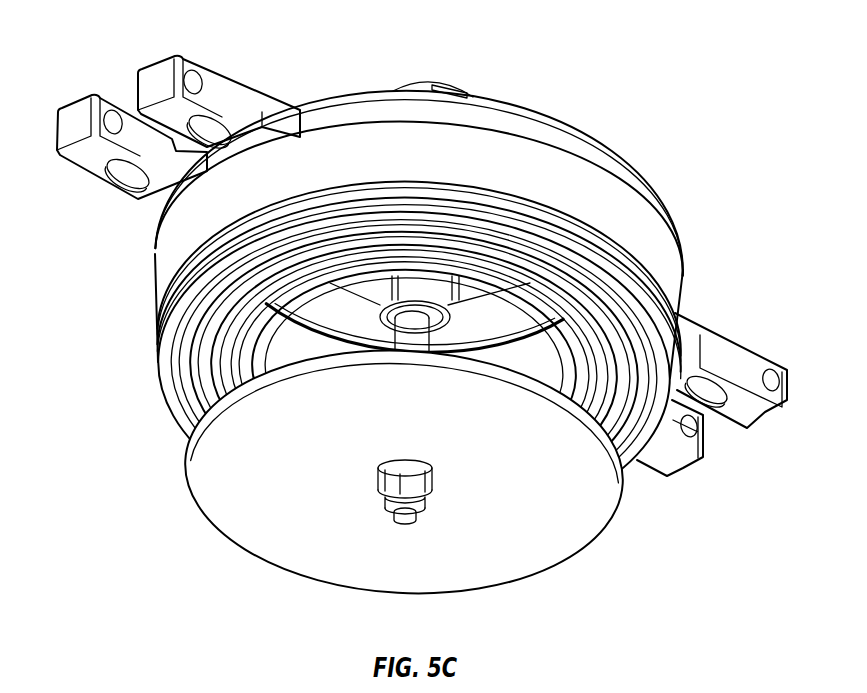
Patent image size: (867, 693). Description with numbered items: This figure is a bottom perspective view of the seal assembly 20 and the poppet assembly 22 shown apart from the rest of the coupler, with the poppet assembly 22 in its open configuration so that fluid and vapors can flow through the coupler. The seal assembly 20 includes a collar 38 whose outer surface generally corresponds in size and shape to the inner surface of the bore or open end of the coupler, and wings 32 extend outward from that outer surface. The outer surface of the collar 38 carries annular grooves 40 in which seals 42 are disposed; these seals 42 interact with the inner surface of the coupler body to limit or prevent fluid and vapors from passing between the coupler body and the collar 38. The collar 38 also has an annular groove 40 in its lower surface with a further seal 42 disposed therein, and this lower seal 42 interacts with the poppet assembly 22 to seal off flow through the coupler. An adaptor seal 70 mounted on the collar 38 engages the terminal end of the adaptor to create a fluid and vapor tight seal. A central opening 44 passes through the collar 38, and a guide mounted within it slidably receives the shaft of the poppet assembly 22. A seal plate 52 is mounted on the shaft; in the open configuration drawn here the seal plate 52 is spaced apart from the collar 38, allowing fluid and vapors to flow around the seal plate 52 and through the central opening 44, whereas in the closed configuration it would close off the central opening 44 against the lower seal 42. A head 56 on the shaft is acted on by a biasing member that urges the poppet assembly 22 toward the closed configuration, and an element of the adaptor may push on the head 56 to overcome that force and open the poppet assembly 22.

The seal assembly 20 is at (700, 118).
The poppet assembly 22 is at (460, 83).
The wings 32 is at (82, 115).
The collar 38 is at (662, 258).
The annular grooves 40 is at (600, 258).
The seals 42 is at (612, 285).
The central opening 44 is at (270, 325).
The seal plate 52 is at (622, 500).
The head 56 is at (410, 85).
The adaptor seal 70 is at (330, 100).